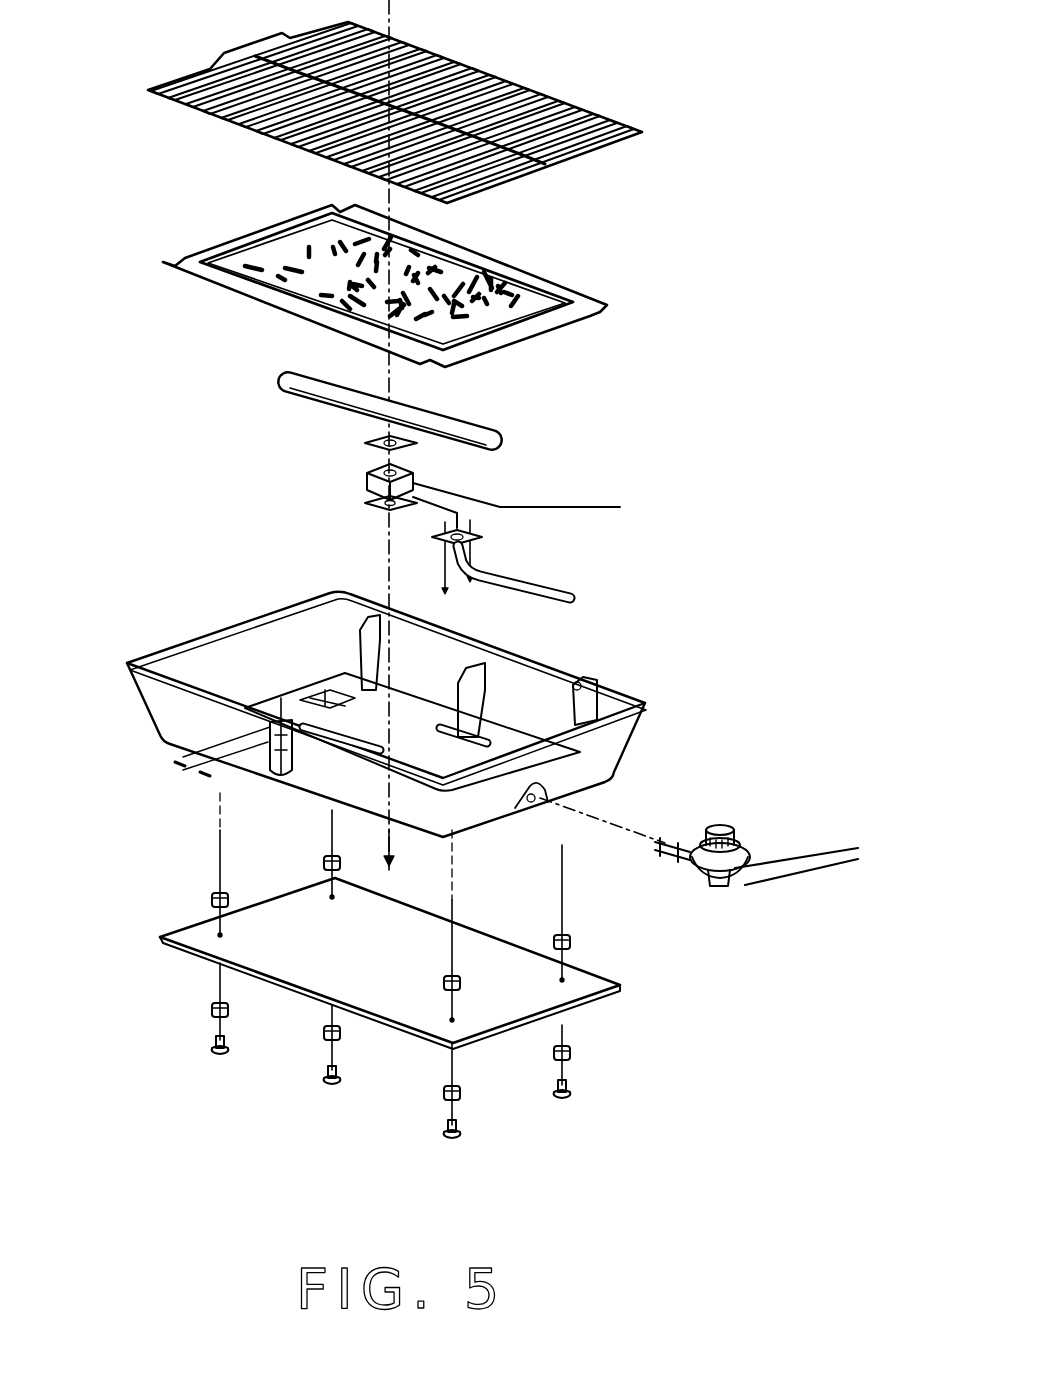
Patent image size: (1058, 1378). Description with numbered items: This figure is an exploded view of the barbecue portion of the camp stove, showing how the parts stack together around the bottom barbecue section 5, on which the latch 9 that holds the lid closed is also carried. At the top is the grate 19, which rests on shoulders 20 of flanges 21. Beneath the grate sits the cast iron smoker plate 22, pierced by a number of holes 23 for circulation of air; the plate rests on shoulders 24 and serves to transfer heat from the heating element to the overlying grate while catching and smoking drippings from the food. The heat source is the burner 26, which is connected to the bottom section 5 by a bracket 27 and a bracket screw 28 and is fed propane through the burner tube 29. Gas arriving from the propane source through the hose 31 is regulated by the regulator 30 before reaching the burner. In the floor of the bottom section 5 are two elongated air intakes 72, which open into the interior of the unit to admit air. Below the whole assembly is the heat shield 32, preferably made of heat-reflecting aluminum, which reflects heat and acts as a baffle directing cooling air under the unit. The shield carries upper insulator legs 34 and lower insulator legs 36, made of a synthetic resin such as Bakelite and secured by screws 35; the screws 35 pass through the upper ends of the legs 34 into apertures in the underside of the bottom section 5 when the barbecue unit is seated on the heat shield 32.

The bottom barbecue section 5 is at (367, 695).
The latch 9 is at (272, 747).
The grate 19 is at (190, 80).
The shoulders 20 is at (592, 690).
The flanges 21 is at (455, 715).
The cast iron smoker plate 22 is at (333, 276).
The holes 23 is at (540, 292).
The shoulders 24 is at (362, 626).
The burner 26 is at (440, 414).
The bracket 27 is at (525, 496).
The bracket screw 28 is at (400, 860).
The burner tube 29 is at (558, 580).
The regulator 30 is at (740, 830).
The hose 31 is at (832, 868).
The heat shield 32 is at (160, 940).
The upper insulator legs 34 is at (210, 900).
The screws 35 is at (218, 1052).
The lower insulator legs 36 is at (210, 1012).
The air intakes 72 is at (350, 725).